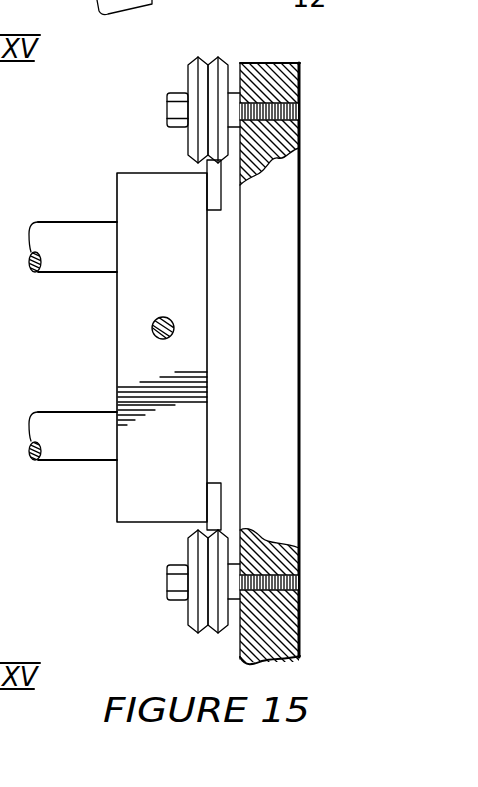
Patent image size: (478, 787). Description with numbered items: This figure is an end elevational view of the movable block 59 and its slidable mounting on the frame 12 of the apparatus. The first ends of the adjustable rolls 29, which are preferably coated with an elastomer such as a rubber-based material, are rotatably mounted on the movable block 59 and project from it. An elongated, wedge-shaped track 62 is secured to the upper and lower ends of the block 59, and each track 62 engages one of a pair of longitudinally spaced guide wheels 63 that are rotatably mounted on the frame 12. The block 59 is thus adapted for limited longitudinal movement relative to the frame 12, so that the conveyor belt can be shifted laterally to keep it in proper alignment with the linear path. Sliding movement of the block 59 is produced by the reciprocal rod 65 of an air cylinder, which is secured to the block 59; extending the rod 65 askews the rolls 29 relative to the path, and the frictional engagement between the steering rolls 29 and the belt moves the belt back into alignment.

The frame 12 is at (264, 56).
The adjustable rolls 29 is at (78, 227).
The movable block 59 is at (130, 287).
The wedge-shaped track 62 is at (206, 168).
The guide wheels 63 is at (196, 70).
The reciprocal rod 65 is at (152, 330).